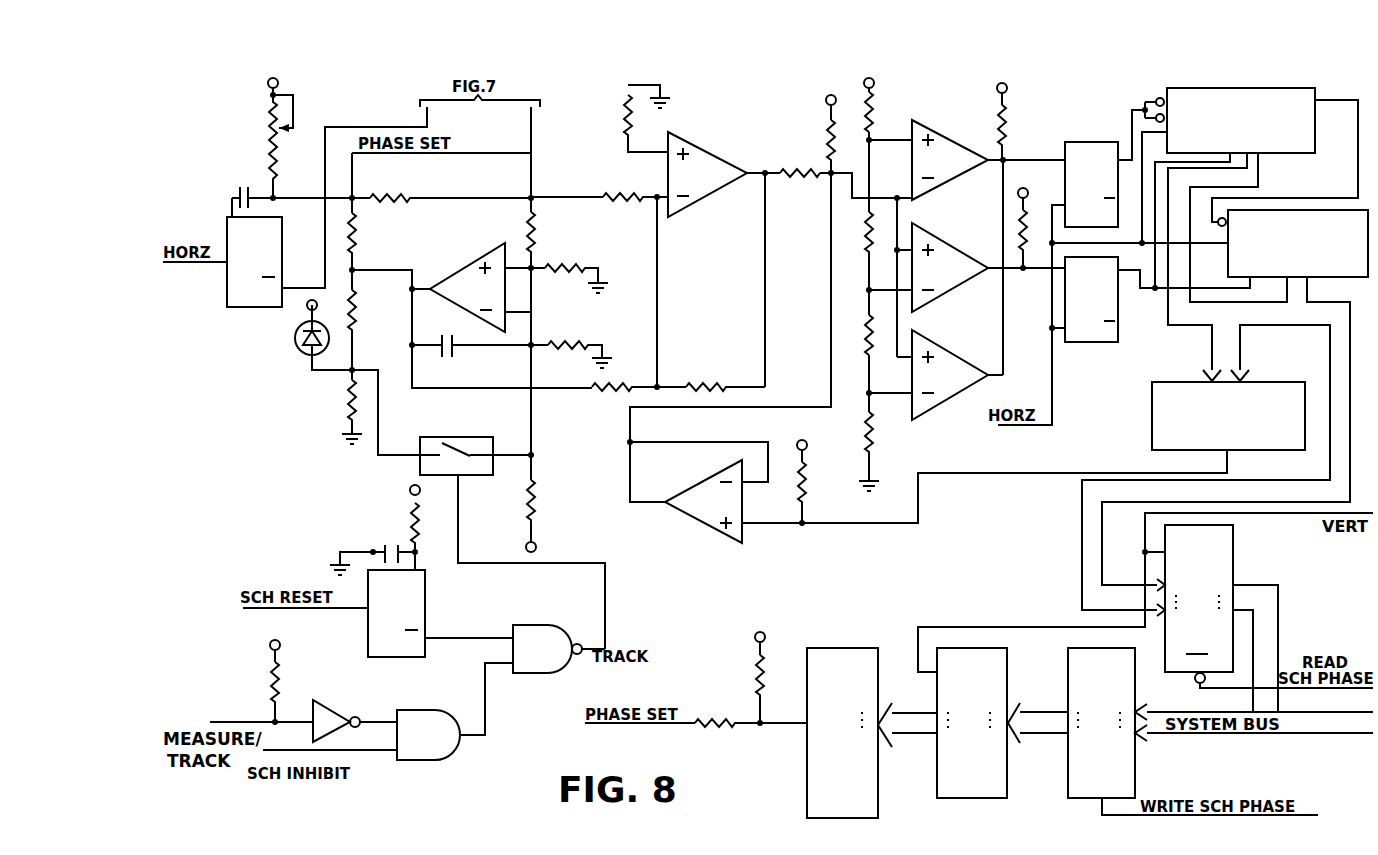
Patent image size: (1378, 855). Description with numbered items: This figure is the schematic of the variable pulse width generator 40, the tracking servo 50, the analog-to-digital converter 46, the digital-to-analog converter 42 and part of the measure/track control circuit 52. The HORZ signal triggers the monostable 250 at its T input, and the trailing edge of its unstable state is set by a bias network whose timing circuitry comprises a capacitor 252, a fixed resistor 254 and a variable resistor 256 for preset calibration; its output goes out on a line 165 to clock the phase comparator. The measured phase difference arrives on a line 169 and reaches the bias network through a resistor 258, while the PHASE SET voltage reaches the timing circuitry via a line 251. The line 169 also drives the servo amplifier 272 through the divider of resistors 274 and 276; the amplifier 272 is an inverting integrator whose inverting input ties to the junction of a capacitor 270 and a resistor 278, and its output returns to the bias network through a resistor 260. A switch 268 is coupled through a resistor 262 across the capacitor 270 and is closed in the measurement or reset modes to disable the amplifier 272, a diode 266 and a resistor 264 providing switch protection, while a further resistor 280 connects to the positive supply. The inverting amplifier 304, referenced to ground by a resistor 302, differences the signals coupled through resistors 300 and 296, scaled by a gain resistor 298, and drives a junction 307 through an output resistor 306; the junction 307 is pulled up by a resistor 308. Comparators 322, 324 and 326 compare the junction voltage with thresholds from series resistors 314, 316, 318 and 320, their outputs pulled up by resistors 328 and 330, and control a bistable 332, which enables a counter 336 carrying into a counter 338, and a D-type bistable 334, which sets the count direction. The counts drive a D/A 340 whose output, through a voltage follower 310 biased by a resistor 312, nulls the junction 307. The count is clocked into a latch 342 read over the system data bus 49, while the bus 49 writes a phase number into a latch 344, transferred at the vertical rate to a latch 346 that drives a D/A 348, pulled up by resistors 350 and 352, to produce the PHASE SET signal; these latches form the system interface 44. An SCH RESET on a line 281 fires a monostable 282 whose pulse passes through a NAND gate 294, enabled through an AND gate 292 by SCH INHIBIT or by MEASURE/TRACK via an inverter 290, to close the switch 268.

The variable pulse width generator 40 is at (213, 212).
The digital-to-analog converter 42 is at (840, 635).
The latch circuit 44 is at (1017, 610).
The analog-to-digital converter 46 is at (1063, 85).
The system data bus 49 is at (1287, 735).
The tracking servo 50 is at (543, 402).
The measure/track control circuit 52 is at (455, 693).
The line 165 is at (427, 118).
The line 169 is at (528, 135).
The monostable 250 is at (238, 308).
The line 251 is at (352, 153).
The capacitor 252 is at (242, 188).
The fixed resistor 254 is at (300, 165).
The variable resistor 256 is at (280, 93).
The resistor 258 is at (400, 195).
The resistor 260 is at (357, 232).
The resistor 262 is at (357, 317).
The resistor 264 is at (347, 408).
The diode 266 is at (295, 350).
The switch 268 is at (478, 423).
The capacitor 270 is at (457, 348).
The servo amplifier 272 is at (507, 290).
The resistor 274 is at (533, 235).
The resistor 276 is at (563, 262).
The resistor 278 is at (565, 340).
The resistor 280 is at (562, 500).
The line 281 is at (263, 608).
The monostable 282 is at (427, 607).
The inverter 290 is at (327, 689).
The AND gate 292 is at (437, 760).
The NAND gate 294 is at (550, 677).
The resistor 296 is at (622, 380).
The gain resistor 298 is at (707, 382).
The resistor 300 is at (615, 193).
The resistor 302 is at (620, 118).
The operational amplifier 304 is at (715, 192).
The output resistor 306 is at (802, 170).
The junction 307 is at (832, 178).
The resistor 308 is at (820, 137).
The operational amplifier 310 is at (690, 528).
The resistor 312 is at (815, 495).
The resistor 314 is at (875, 122).
The resistor 316 is at (868, 250).
The resistor 318 is at (868, 352).
The resistor 320 is at (875, 447).
The range amplifier 322 is at (960, 177).
The range amplifier 324 is at (963, 290).
The range amplifier 326 is at (973, 383).
The resistor 328 is at (1002, 130).
The resistor 330 is at (1020, 213).
The bistable 332 is at (1092, 169).
The D-type bistable 334 is at (1100, 343).
The counter 336 is at (1280, 155).
The counter 338 is at (1315, 279).
The D/A 340 is at (1240, 452).
The latch 342 is at (1235, 555).
The latch 344 is at (1067, 790).
The latch 346 is at (940, 802).
The D/A 348 is at (807, 790).
The resistor 350 is at (753, 682).
The resistor 352 is at (717, 727).